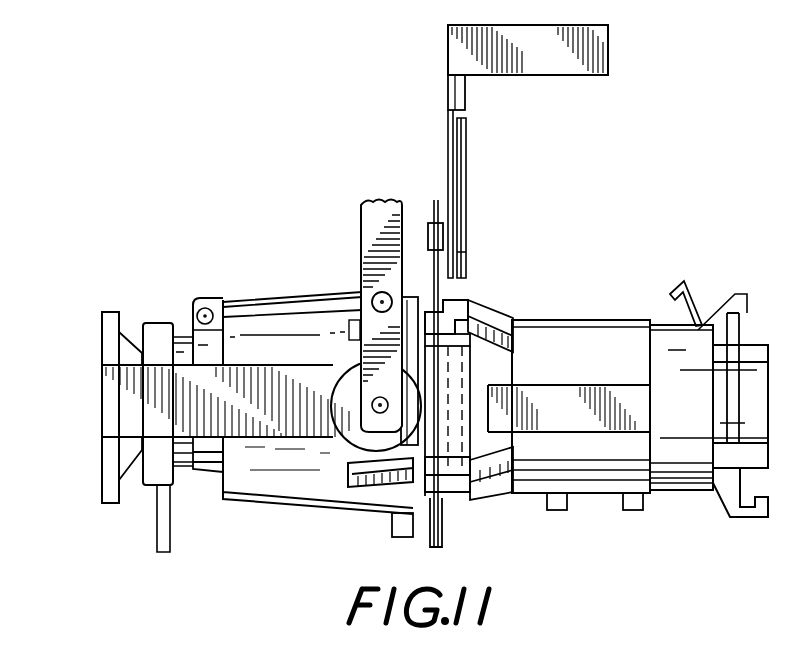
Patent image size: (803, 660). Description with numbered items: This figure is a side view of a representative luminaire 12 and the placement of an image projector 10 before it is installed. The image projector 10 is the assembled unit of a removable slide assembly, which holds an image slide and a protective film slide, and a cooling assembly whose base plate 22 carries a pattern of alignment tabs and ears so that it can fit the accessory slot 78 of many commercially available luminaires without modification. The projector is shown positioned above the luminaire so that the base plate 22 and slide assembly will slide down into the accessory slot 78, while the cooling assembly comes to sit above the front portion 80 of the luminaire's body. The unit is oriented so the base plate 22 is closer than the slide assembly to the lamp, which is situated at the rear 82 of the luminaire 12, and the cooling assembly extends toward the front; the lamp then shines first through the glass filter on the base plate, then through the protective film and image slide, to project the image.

The image projector 10 is at (458, 58).
The base plate 22 is at (451, 152).
The luminaire 12 is at (268, 318).
The accessory slot 78 is at (454, 322).
The front portion 80 is at (598, 338).
The rear 82 is at (105, 411).